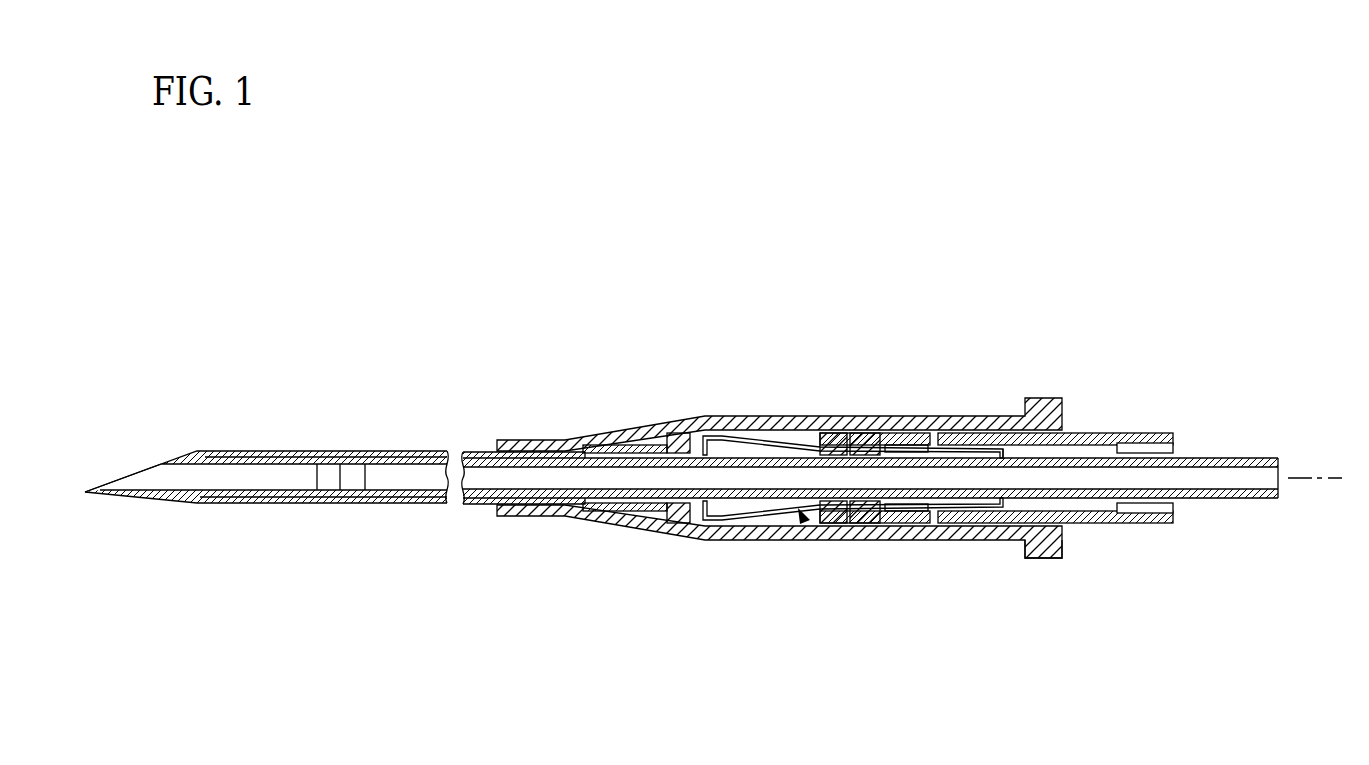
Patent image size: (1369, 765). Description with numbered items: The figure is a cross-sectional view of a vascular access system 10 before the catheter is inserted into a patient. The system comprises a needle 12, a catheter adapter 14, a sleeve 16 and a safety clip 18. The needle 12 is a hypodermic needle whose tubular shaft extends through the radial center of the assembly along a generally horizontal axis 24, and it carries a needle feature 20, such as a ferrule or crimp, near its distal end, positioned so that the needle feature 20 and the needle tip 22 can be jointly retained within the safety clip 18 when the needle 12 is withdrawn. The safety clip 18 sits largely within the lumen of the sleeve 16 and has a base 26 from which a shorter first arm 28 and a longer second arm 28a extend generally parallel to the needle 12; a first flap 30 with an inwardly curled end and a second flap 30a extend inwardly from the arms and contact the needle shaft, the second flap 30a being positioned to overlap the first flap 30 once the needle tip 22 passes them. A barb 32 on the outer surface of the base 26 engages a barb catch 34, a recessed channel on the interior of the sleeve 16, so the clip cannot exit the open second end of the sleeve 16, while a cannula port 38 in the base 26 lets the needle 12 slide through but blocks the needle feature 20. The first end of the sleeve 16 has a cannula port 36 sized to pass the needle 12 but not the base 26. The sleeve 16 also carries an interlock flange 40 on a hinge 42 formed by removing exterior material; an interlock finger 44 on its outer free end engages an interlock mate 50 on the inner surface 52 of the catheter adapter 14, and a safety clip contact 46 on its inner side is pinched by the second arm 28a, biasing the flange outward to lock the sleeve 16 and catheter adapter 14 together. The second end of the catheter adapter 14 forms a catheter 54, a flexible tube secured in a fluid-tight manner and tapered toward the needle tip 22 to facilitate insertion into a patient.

The vascular access system 10 is at (1152, 217).
The needle 12 is at (1265, 498).
The catheter adapter 14 is at (607, 438).
The sleeve 16 is at (1160, 433).
The safety clip 18 is at (803, 522).
The needle feature 20 is at (328, 478).
The needle tip 22 is at (85, 492).
The generally horizontal axis 24 is at (1302, 476).
The base 26 is at (968, 433).
The first arm 28 is at (772, 512).
The second arm 28a is at (748, 440).
The first flap 30 is at (703, 518).
The second flap 30a is at (695, 436).
The barb 32 is at (985, 523).
The barb catch 34 is at (1130, 513).
The cannula port 36 is at (1177, 458).
The cannula port 38 is at (1010, 470).
The interlock flange 40 is at (906, 433).
The hinge 42 is at (935, 523).
The interlock finger 44 is at (870, 523).
The safety clip contact 46 is at (836, 433).
The interlock mate 50 is at (860, 433).
The inner surface 52 is at (1048, 528).
The catheter 54 is at (307, 451).